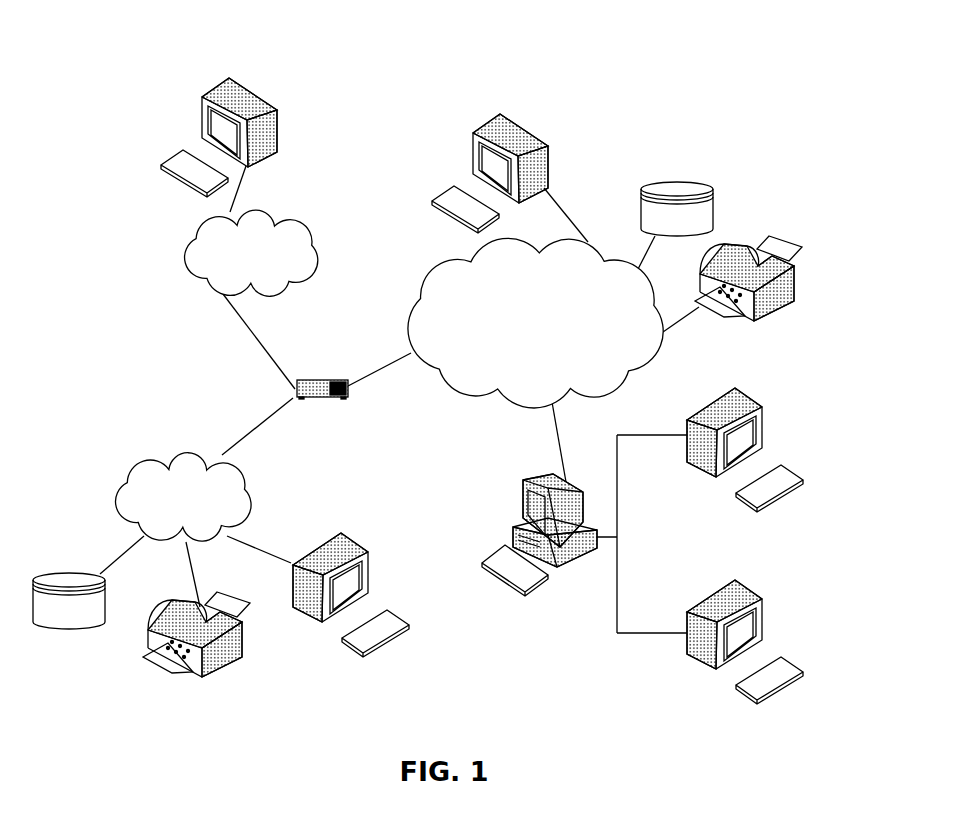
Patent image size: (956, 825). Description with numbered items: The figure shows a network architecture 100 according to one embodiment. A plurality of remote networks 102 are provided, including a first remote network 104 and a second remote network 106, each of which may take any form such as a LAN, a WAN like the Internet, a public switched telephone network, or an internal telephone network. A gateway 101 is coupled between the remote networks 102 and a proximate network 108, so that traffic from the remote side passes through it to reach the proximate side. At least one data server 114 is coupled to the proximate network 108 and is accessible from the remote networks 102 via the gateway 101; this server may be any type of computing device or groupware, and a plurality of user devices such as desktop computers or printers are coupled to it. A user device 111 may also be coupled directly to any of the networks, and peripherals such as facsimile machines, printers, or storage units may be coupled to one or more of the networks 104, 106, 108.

The architecture 100 is at (138, 60).
The gateway 101 is at (305, 378).
The remote networks 102 is at (164, 312).
The first remote network 104 is at (122, 475).
The second remote network 106 is at (313, 230).
The proximate network 108 is at (627, 381).
The user device 111 is at (548, 143).
The data server 114 is at (522, 495).